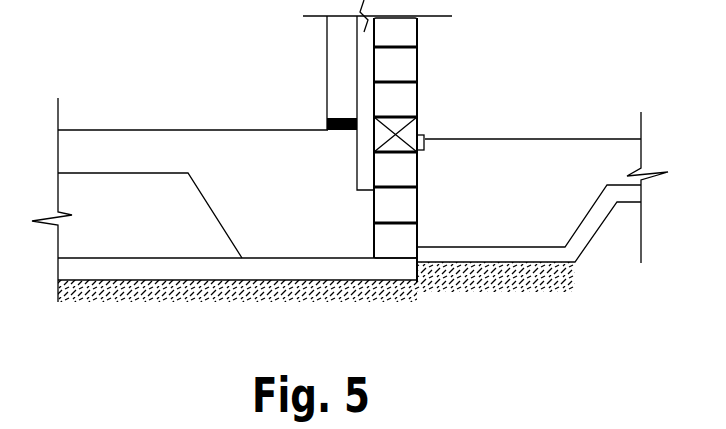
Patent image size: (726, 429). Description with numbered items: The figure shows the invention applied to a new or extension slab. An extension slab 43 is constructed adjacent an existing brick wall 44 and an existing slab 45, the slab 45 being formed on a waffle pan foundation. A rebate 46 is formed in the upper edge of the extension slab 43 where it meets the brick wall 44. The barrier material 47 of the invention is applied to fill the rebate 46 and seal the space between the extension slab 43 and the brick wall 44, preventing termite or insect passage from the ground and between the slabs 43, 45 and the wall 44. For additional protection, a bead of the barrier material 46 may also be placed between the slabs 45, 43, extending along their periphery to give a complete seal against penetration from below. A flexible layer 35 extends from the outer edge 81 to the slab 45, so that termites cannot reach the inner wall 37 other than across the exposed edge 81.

The flexible layer 35 is at (373, 172).
The inner wall 37 is at (361, 146).
The extension slab 43 is at (562, 162).
The existing wall 44 is at (430, 48).
The slab 45 is at (211, 135).
The rebate 46 is at (442, 163).
The barrier material 47 is at (426, 137).
The outer edge 81 is at (397, 114).